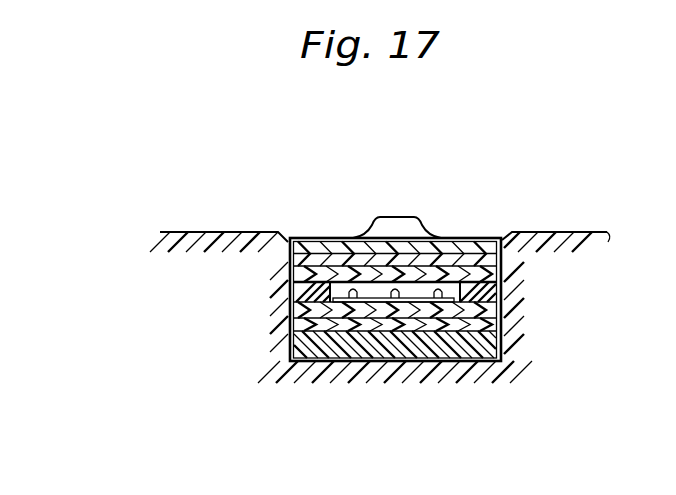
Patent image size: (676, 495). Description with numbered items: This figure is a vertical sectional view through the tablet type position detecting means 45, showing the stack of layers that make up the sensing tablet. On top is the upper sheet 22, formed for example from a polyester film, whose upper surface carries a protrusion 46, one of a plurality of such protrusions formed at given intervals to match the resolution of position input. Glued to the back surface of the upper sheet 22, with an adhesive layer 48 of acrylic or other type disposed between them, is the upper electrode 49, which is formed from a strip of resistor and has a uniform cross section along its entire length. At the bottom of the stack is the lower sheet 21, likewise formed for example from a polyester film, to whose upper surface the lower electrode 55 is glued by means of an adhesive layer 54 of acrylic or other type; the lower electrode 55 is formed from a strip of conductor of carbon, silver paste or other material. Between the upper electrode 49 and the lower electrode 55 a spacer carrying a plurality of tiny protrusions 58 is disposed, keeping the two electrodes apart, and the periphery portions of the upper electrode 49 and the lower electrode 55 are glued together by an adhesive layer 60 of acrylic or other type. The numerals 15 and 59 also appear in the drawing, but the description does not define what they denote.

The substrate 15 is at (593, 237).
The position detecting means 45 is at (507, 159).
The upper sheet 22 is at (482, 237).
The protrusion 46 is at (397, 222).
The adhesive layer 48 is at (300, 258).
The upper electrode 49 is at (488, 272).
The adhesive layer 60 is at (300, 296).
The tiny protrusions 58 is at (331, 283).
The semiconductor chip with contacts 59 is at (352, 285).
The lower electrode 55 is at (485, 309).
The adhesive layer 54 is at (300, 332).
The lower sheet 21 is at (485, 344).